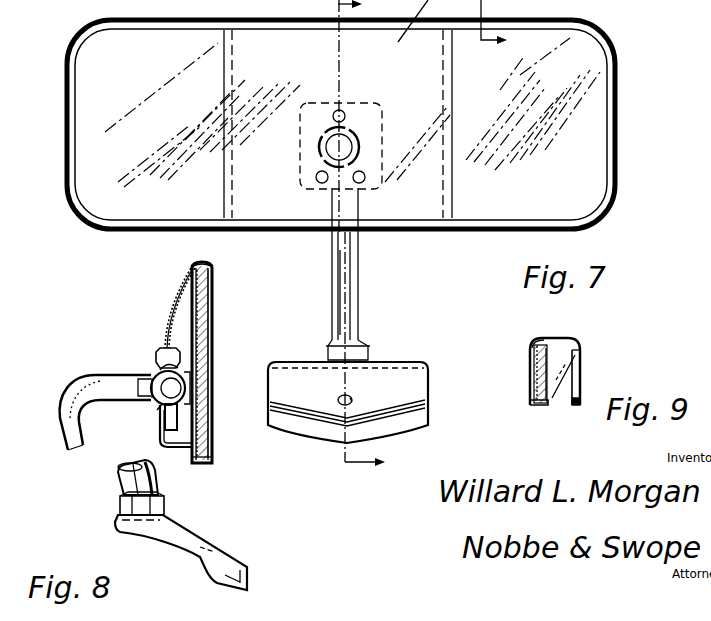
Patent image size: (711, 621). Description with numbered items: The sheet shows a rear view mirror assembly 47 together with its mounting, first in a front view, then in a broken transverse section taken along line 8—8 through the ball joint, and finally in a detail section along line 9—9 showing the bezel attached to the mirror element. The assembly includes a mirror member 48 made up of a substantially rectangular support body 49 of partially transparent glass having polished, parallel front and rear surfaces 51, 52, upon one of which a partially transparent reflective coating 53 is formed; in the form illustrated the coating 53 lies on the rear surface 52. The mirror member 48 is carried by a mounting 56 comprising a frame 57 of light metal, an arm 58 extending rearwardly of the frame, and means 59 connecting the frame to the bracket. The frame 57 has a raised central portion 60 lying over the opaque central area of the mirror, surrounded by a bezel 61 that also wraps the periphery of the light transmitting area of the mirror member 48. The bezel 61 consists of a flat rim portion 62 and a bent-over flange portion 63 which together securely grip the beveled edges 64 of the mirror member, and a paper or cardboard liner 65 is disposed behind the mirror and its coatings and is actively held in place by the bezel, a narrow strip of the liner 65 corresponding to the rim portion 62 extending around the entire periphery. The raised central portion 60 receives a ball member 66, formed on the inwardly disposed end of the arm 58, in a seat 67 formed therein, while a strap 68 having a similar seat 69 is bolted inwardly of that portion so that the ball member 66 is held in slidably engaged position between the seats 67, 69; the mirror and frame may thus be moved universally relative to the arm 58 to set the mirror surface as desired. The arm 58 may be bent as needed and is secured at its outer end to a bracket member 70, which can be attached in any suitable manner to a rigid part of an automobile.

In FIG. 7, the rear view mirror assembly 47 is at (68, 52).
In FIG. 8, the rear view mirror assembly 47 is at (106, 345).
In FIG. 7, the mirror member 48 is at (98, 106).
In FIG. 8, the mirror member 48 is at (216, 277).
In FIG. 9, the mirror member 48 is at (590, 378).
In FIG. 8, the support body 49 is at (174, 436).
In FIG. 9, the support body 49 is at (562, 387).
In FIG. 9, the front surface 51 is at (578, 402).
In FIG. 9, the rear surface 52 is at (536, 402).
In FIG. 8, the partially transparent reflective coating 53 is at (207, 310).
In FIG. 9, the partially transparent reflective coating 53 is at (538, 385).
In FIG. 7, the mounting 56 is at (362, 243).
In FIG. 8, the mounting 56 is at (80, 372).
In FIG. 8, the frame 57 is at (165, 310).
In FIG. 7, the arm 58 is at (346, 290).
In FIG. 8, the arm 58 is at (118, 478).
In FIG. 8, the means connecting the frame to the bracket member 59 is at (155, 412).
In FIG. 8, the raised central portion 60 is at (178, 326).
In FIG. 7, the bezel 61 is at (68, 152).
In FIG. 8, the bezel 61 is at (190, 267).
In FIG. 9, the bezel 61 is at (538, 343).
In FIG. 8, the flat rim portion 62 is at (188, 274).
In FIG. 9, the flat rim portion 62 is at (534, 355).
In FIG. 8, the bent-over flange portion 63 is at (200, 266).
In FIG. 9, the bent-over flange portion 63 is at (560, 340).
In FIG. 9, the beveled edges 64 is at (578, 356).
In FIG. 8, the liner 65 is at (192, 337).
In FIG. 9, the liner 65 is at (536, 365).
In FIG. 8, the ball member 66 is at (207, 372).
In FIG. 8, the seat 67 is at (157, 378).
In FIG. 8, the strap 68 is at (172, 426).
In FIG. 8, the seat 69 is at (178, 408).
In FIG. 7, the bracket member 70 is at (370, 376).
In FIG. 8, the bracket member 70 is at (182, 545).
In FIG. 7, the section line 8— 8 is at (403, 469).
In FIG. 7, the section line 9— 9 is at (523, 48).